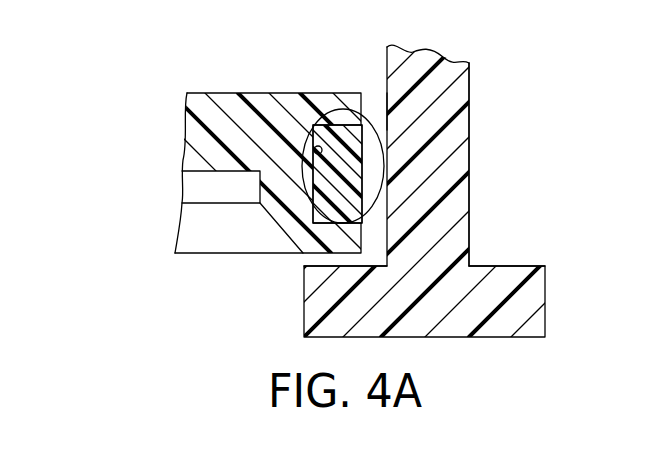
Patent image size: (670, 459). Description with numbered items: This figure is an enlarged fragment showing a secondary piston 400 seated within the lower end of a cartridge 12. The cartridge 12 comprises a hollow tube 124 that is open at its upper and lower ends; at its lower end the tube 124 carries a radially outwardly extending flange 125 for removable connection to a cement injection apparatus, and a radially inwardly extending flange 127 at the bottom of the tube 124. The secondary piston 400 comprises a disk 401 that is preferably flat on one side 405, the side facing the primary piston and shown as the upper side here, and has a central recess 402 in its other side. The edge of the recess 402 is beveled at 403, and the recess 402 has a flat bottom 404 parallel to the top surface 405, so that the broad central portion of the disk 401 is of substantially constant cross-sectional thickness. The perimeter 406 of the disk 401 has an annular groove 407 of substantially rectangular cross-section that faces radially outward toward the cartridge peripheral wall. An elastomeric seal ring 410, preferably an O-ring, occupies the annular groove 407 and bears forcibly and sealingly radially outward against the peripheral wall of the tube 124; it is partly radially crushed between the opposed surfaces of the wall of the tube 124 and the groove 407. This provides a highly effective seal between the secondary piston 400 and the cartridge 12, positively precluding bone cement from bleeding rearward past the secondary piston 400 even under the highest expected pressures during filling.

The secondary piston 400 is at (183, 84).
The disk 401 is at (214, 85).
The central recess 402 is at (257, 198).
The bevel 403 is at (282, 227).
The flat bottom 404 is at (197, 178).
The flat side 405 is at (283, 93).
The perimeter 406 is at (362, 112).
The annular groove 407 is at (318, 146).
The elastomeric seal ring 410 is at (367, 189).
The cartridge 12 is at (474, 152).
The hollow tube 124 is at (467, 120).
The radially outwardly extending flange 125 is at (520, 266).
The radially inwardly extending flange 127 is at (304, 297).